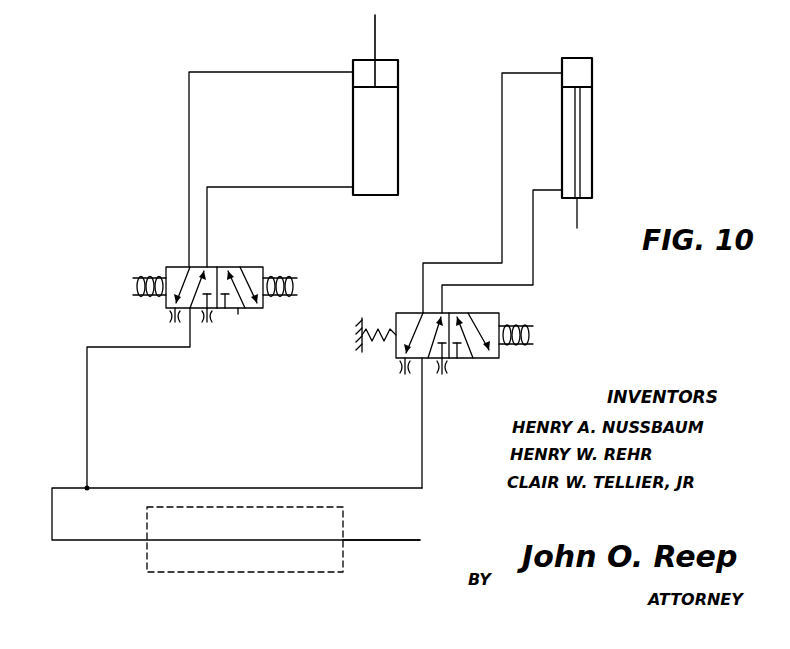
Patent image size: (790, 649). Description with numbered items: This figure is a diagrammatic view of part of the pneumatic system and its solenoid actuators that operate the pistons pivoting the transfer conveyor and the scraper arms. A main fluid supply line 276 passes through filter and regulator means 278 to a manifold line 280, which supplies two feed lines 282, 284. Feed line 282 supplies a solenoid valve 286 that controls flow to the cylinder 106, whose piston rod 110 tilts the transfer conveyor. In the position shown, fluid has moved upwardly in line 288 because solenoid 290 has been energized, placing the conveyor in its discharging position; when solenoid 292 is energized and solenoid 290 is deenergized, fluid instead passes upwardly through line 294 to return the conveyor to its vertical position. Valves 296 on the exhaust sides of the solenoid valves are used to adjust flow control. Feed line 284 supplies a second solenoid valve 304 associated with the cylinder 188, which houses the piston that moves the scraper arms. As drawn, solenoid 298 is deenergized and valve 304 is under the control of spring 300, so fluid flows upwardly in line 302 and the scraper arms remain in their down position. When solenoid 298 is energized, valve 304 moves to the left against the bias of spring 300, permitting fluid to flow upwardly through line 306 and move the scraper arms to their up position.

The cylinder 106 is at (398, 127).
The piston rod 110 is at (376, 31).
The cylinder 188 is at (592, 103).
The main fluid supply line 276 is at (388, 540).
The filter and regulator means 278 is at (302, 472).
The manifold line 280 is at (120, 488).
The feed line 282 is at (87, 413).
The feed line 284 is at (422, 419).
The solenoid valve 286 is at (237, 314).
The line 288 is at (333, 187).
The solenoid 290 is at (133, 281).
The solenoid 292 is at (296, 275).
The line 294 is at (189, 127).
The valves 296 is at (198, 327).
The solenoid 298 is at (533, 330).
The spring 300 is at (377, 333).
The line 302 is at (533, 250).
The solenoid valve 304 is at (478, 361).
The line 306 is at (502, 125).